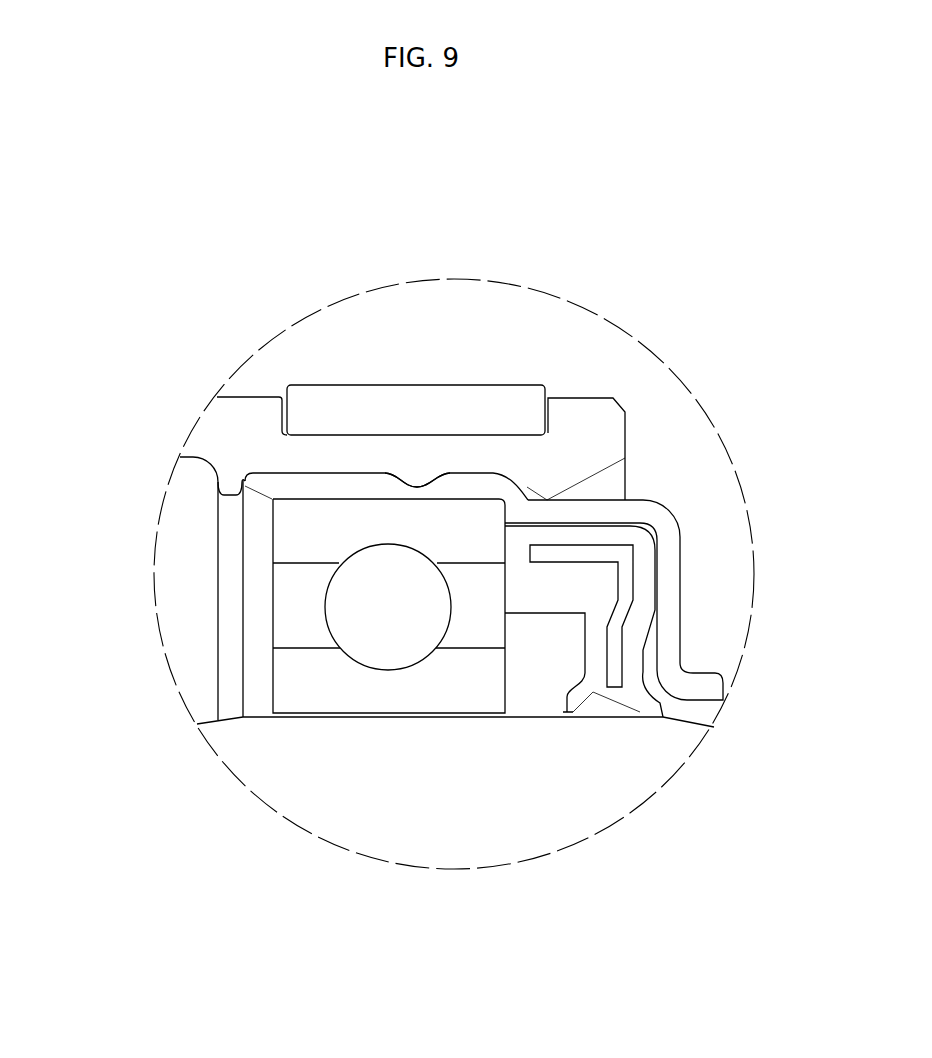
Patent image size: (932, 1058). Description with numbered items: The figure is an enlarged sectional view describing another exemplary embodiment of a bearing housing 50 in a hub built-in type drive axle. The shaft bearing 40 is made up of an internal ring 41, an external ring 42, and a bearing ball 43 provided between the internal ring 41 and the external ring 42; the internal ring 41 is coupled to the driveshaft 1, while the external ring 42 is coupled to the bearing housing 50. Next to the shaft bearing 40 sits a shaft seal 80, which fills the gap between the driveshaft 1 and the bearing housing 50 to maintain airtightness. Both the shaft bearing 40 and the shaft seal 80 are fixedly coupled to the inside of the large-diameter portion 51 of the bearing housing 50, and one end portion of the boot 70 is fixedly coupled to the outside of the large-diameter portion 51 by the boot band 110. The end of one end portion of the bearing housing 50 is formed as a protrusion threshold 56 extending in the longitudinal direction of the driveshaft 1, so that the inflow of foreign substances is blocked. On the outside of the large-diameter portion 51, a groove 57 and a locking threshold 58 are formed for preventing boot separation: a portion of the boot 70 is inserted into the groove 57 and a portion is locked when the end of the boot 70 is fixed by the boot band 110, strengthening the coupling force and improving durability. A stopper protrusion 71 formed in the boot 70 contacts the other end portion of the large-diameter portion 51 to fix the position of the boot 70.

The driveshaft 1 is at (548, 818).
The shaft bearing 40 is at (262, 677).
The internal ring 41 is at (403, 693).
The external ring 42 is at (297, 535).
The bearing ball 43 is at (377, 602).
The bearing housing 50 is at (678, 503).
The large-diameter portion 51 is at (348, 485).
The protrusion threshold 56 is at (700, 668).
The groove 57 is at (400, 480).
The locking threshold 58 is at (527, 487).
The boot 70 is at (363, 447).
The stopper protrusion 71 is at (233, 487).
The shaft seal 80 is at (593, 585).
The boot band 110 is at (481, 412).